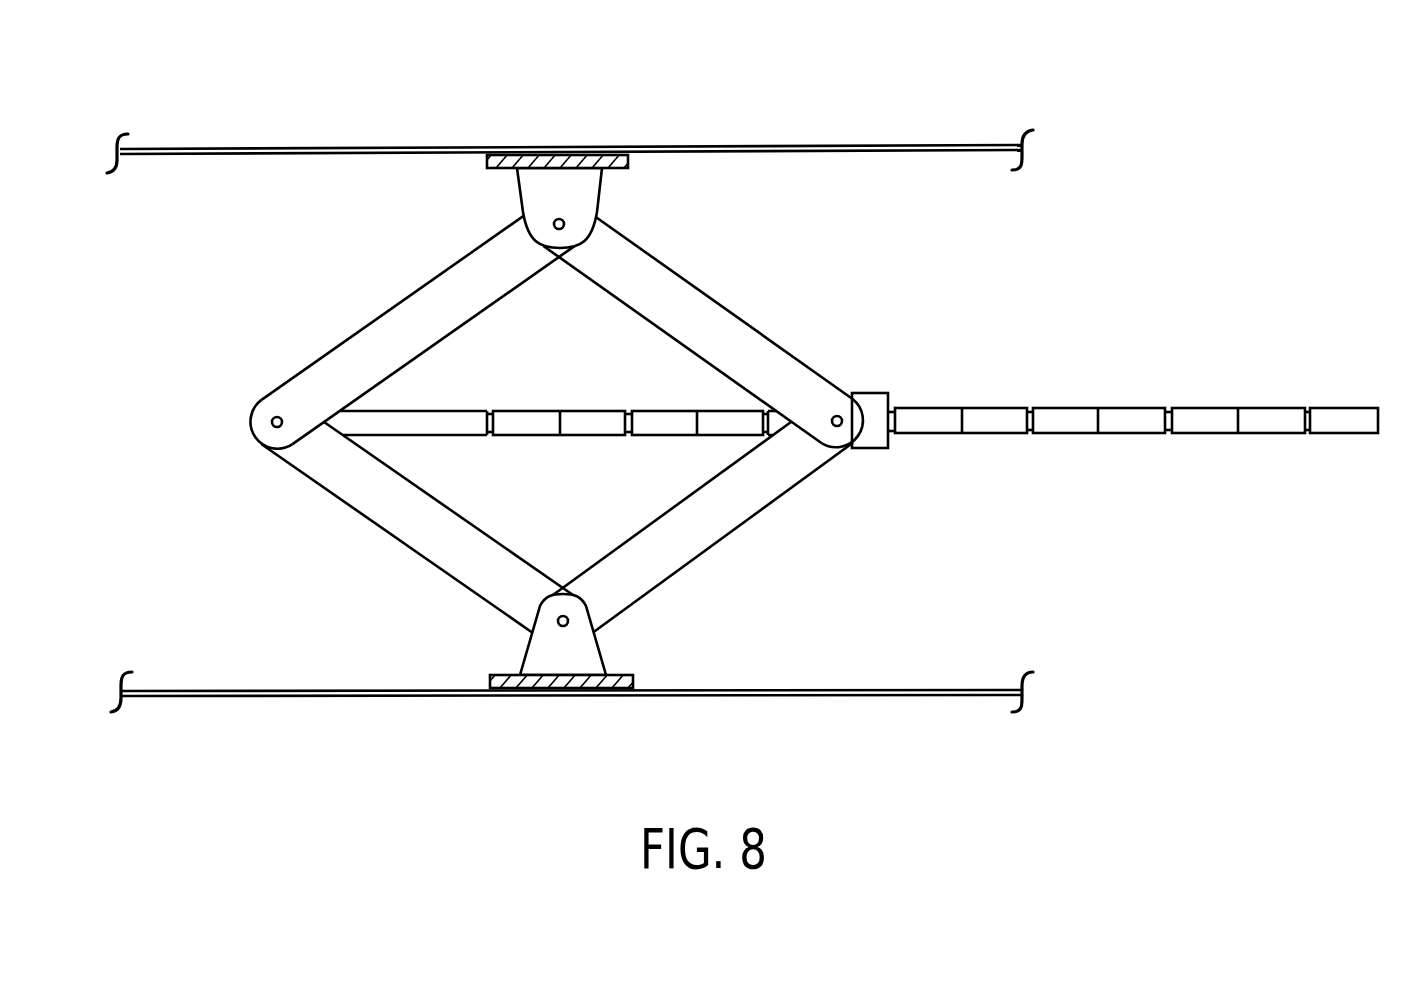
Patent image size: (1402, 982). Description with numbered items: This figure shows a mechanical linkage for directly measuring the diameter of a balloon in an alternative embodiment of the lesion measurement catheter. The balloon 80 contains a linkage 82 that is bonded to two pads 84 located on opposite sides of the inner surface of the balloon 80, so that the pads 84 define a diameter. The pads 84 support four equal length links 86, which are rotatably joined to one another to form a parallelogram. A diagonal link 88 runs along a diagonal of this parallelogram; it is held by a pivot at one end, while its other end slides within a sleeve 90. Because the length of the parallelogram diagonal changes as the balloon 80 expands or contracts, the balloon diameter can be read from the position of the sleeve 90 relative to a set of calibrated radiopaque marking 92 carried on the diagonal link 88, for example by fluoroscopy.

The balloon 80 is at (873, 146).
The linkage 82 is at (178, 338).
The pads 84 is at (628, 169).
The links 86 is at (435, 277).
The diagonal link 88 is at (527, 411).
The sleeve 90 is at (866, 393).
The calibrated radiopaque marking 92 is at (1170, 408).